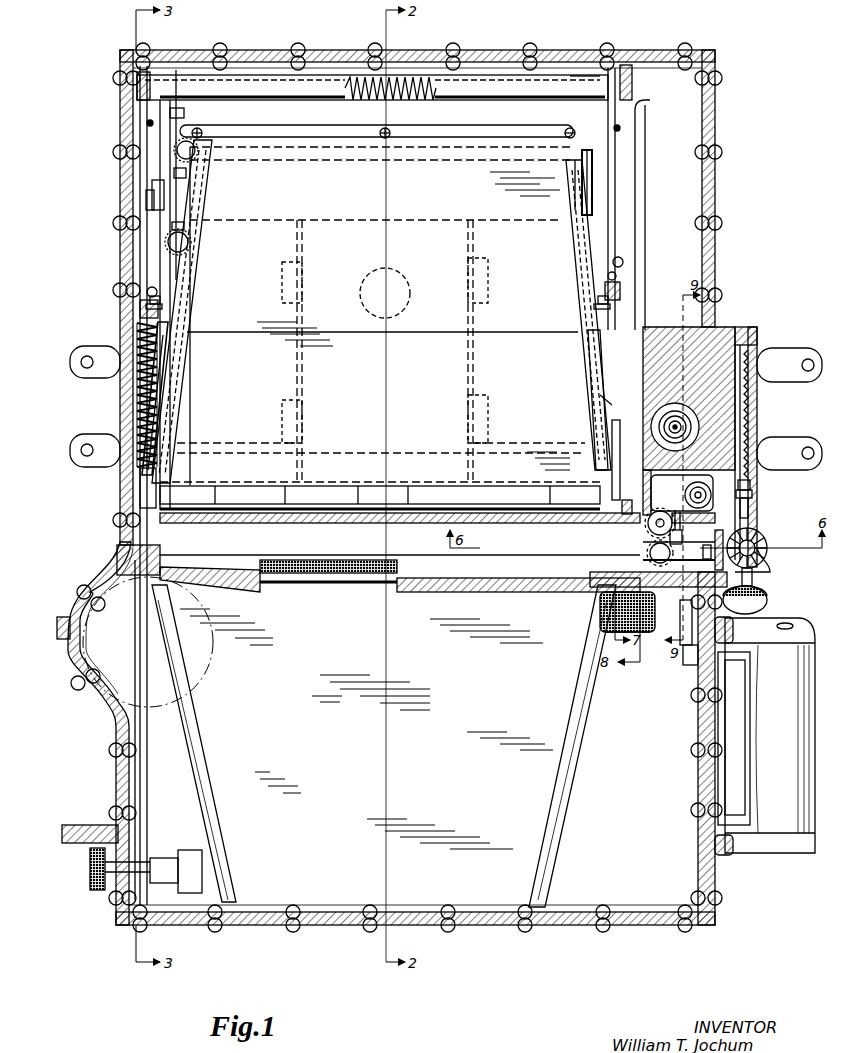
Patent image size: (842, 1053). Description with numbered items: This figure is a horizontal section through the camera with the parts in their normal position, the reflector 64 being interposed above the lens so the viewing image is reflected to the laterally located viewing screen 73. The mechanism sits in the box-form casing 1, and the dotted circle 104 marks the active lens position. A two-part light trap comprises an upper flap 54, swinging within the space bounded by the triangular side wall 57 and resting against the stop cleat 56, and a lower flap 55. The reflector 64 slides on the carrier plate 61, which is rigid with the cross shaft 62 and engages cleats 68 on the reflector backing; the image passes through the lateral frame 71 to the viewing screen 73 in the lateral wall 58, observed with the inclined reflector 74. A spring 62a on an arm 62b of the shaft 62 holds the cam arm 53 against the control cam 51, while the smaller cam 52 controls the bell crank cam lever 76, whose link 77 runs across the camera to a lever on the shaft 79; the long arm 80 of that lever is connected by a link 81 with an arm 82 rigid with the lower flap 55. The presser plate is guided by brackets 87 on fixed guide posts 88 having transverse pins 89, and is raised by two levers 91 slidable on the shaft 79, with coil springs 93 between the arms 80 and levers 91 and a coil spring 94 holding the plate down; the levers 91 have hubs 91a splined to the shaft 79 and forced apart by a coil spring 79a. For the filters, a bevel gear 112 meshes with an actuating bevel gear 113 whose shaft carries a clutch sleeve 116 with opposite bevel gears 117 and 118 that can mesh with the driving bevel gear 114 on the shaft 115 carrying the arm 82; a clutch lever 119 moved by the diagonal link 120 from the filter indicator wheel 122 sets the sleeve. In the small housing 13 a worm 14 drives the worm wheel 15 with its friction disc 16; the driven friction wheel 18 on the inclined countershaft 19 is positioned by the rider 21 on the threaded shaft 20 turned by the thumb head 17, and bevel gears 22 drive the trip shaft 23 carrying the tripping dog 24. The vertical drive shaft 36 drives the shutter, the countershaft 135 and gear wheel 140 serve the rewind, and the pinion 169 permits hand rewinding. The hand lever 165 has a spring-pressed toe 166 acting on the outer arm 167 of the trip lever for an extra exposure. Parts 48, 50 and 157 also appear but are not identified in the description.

The casing 1 is at (512, 52).
The hubs 91a is at (270, 72).
The shaft 79 is at (575, 80).
The coil spring 79a is at (362, 100).
The long arm 80 is at (143, 110).
The coil springs 93 is at (148, 124).
The levers 91 is at (160, 152).
The clutch sleeve 116 is at (152, 190).
The clutch lever 119 is at (148, 205).
The diagonal link 120 is at (143, 227).
The flap 55 is at (215, 270).
The bevel gear 117 is at (198, 118).
The driving bevel gear 114 is at (192, 140).
The bevel gear 118 is at (186, 172).
The side wall 57 is at (203, 218).
The actuating bevel gear 113 is at (186, 226).
The bevel gear 112 is at (190, 243).
The shaft 115 is at (478, 148).
The reflector 64 is at (422, 238).
The arm 82 is at (590, 170).
The link 81 is at (588, 200).
The dotted circle 104 is at (405, 286).
The carrier plate 61 is at (440, 368).
The cleats 68 is at (487, 284).
The guide posts 88 is at (135, 312).
The transverse pins 89 is at (165, 300).
The guide brackets 87 is at (168, 310).
The stop cleat 56 is at (172, 388).
The spring 62a is at (152, 402).
The flap 54 is at (146, 410).
The arm 62b is at (138, 480).
The cross shaft 62 is at (294, 514).
The lateral frame 71 is at (383, 520).
The viewing screen 73 is at (335, 560).
The countershaft 135 is at (605, 400).
The cam lever 76 is at (605, 436).
The cam arm 53 is at (628, 544).
The link 77 is at (640, 242).
The coil spring 94 is at (623, 262).
The gear wheel 140 is at (758, 346).
The bearing 157 is at (682, 430).
The worm wheel 15 is at (742, 396).
The friction disc 16 is at (744, 404).
The pinion 169 is at (746, 425).
The driven friction wheel 18 is at (750, 490).
The rider 21 is at (752, 498).
The inclined countershaft 19 is at (750, 505).
The bevel gears 22 is at (766, 542).
The vertical drive shaft 36 is at (694, 488).
The pinion 48 is at (662, 514).
The trip shaft 23 is at (686, 519).
The tripping dog 24 is at (689, 525).
The worm 14 is at (684, 546).
The small housing 13 is at (712, 558).
The threaded shaft 20 is at (760, 568).
The thumb head 17 is at (762, 606).
The gear 50 is at (648, 558).
The lateral wall 58 is at (505, 592).
The cam 52 is at (602, 607).
The control cam 51 is at (602, 628).
The outer arm 167 is at (684, 619).
The spring-pressed toe 166 is at (688, 660).
The inclined reflector 74 is at (560, 786).
The filter indicator wheel 122 is at (200, 858).
The hand lever 165 is at (745, 822).